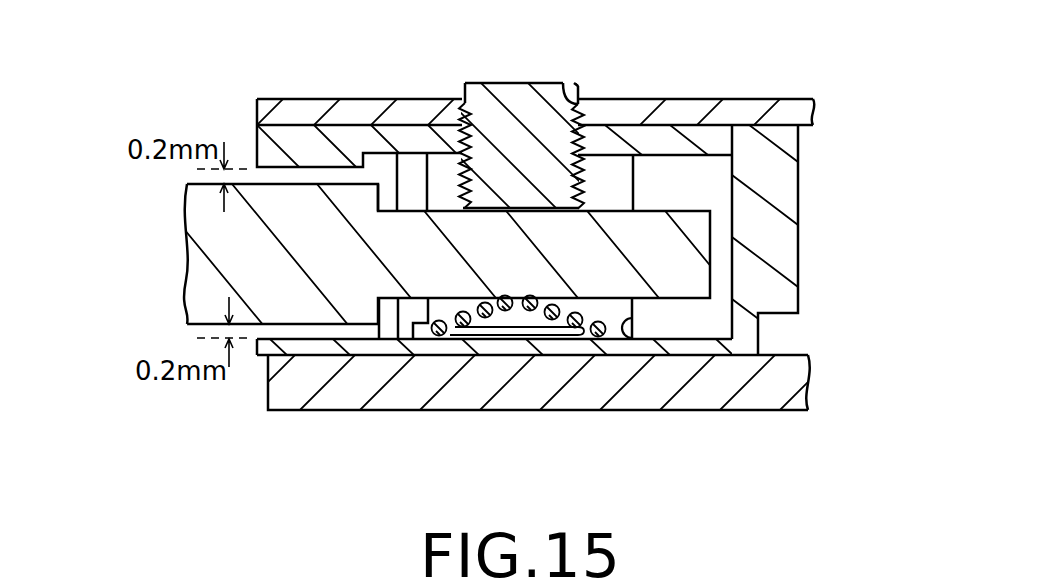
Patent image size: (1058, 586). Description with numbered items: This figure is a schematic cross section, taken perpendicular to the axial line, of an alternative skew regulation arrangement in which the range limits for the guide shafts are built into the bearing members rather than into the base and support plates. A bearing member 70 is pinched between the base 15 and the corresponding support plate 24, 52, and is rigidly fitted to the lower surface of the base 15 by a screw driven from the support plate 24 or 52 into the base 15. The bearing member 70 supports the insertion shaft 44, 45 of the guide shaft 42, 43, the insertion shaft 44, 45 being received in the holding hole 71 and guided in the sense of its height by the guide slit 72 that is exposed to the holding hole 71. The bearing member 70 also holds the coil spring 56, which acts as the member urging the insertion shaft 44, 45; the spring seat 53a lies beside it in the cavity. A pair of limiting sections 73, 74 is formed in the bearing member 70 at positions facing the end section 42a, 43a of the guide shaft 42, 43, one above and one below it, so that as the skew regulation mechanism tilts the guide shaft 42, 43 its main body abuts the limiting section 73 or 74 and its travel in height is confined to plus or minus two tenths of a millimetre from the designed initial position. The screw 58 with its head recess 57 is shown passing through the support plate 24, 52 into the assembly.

The base 15 is at (595, 402).
The support plate 24 is at (547, 64).
The support plate 52 is at (677, 107).
The guide shaft 42 is at (401, 255).
The guide shaft 43 is at (193, 248).
The end section 42a is at (369, 108).
The end section 43a is at (372, 165).
The insertion shaft 44 is at (717, 129).
The insertion shaft 45 is at (694, 230).
The spring seat 53a is at (486, 342).
The coil spring 56 is at (576, 338).
The screw head recess 57 is at (568, 87).
The screw 58 is at (520, 97).
The bearing member 70 is at (783, 235).
The holding hole 71 is at (622, 322).
The guide slit 72 is at (408, 308).
The limiting section 73 is at (296, 340).
The limiting section 74 is at (278, 168).